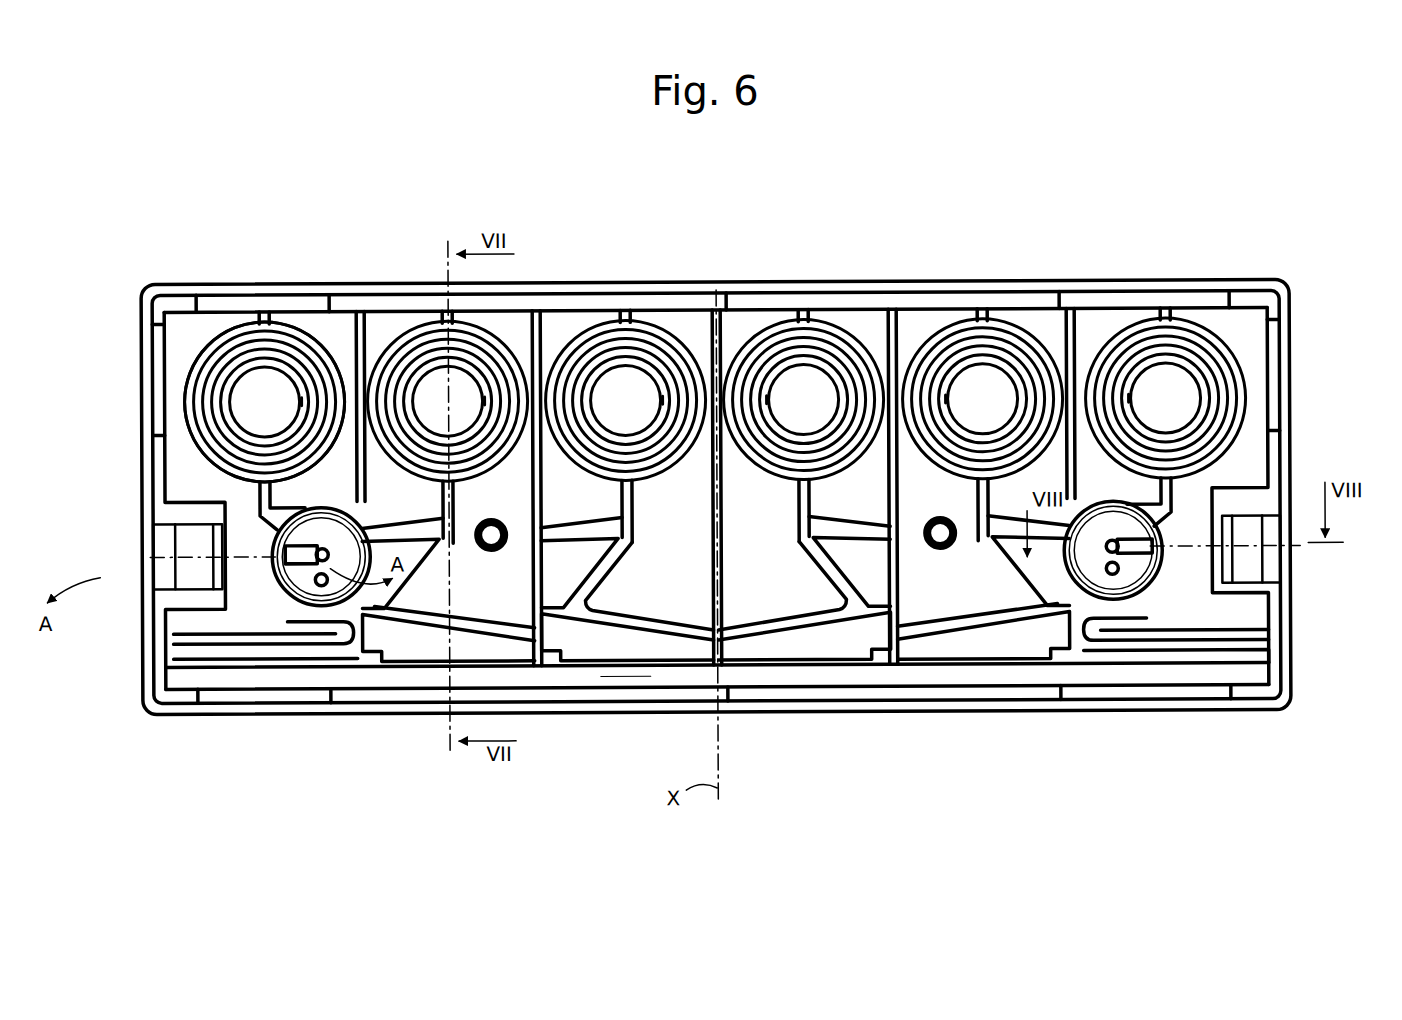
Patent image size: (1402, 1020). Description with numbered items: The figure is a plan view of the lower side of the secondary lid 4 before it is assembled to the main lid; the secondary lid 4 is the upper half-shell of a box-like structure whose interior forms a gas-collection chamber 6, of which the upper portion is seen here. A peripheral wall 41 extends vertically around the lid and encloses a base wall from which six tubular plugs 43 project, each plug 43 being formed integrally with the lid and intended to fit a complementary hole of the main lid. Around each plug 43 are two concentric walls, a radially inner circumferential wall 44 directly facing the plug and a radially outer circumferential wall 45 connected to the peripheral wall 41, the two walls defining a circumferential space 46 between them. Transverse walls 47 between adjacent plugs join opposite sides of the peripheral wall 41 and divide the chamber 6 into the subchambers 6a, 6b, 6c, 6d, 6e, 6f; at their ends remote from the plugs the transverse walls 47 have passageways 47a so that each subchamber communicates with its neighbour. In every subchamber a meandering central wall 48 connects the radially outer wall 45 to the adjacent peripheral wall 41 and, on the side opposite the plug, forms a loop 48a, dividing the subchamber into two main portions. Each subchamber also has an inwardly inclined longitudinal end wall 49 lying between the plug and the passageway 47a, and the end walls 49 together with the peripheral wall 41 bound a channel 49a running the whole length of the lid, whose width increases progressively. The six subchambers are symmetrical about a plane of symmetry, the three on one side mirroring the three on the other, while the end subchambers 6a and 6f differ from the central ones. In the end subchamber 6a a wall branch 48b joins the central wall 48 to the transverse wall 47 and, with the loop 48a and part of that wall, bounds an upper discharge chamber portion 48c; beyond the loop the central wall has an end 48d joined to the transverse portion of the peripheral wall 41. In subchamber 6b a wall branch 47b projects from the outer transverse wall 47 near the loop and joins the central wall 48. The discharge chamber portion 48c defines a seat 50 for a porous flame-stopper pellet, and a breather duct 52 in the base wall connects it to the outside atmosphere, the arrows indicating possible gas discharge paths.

The secondary lid 4 is at (1312, 232).
The internal gas-collection chamber 6 is at (675, 582).
The subchamber 6a is at (1232, 312).
The subchamber 6b is at (1010, 312).
The subchamber 6c is at (818, 312).
The subchamber 6d is at (664, 312).
The subchamber 6e is at (528, 312).
The subchamber 6f is at (330, 310).
The peripheral wall 41 is at (1267, 377).
The tubular plug 43 is at (228, 388).
The radially inner circumferential wall 44 is at (1160, 330).
The radially outer circumferential wall 45 is at (1125, 335).
The circumferential space 46 is at (205, 405).
The transverse wall 47 is at (1075, 312).
The passageway 47a is at (1045, 665).
The wall branch 47b is at (1038, 516).
The central wall 48 is at (962, 520).
The loop 48a is at (1068, 640).
The wall branch 48b is at (1127, 505).
The upper discharge chamber portion 48c is at (1152, 588).
The end of central wall 48d is at (1245, 640).
The end wall 49 is at (992, 658).
The channel 49a is at (622, 668).
The seat 50 is at (1127, 603).
The breather duct 52 is at (1150, 543).